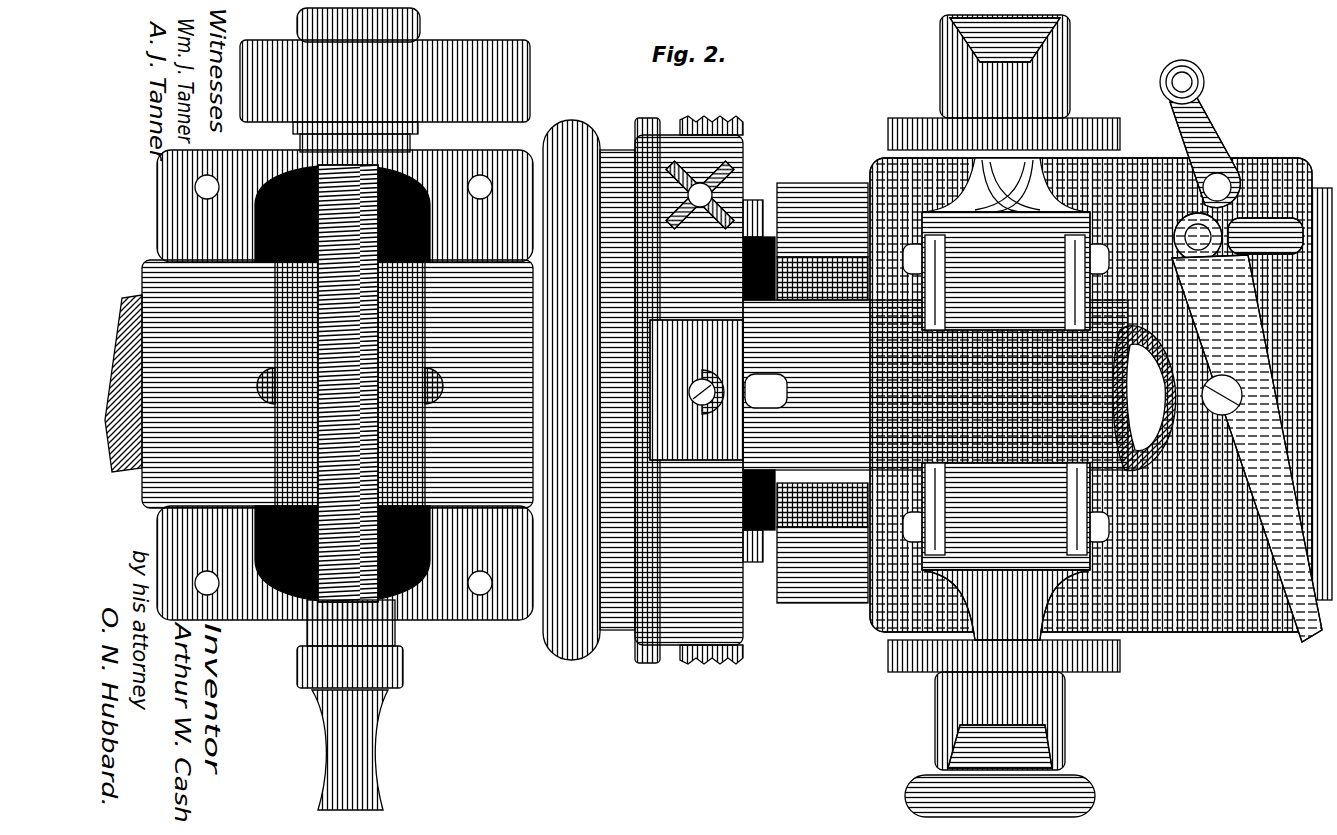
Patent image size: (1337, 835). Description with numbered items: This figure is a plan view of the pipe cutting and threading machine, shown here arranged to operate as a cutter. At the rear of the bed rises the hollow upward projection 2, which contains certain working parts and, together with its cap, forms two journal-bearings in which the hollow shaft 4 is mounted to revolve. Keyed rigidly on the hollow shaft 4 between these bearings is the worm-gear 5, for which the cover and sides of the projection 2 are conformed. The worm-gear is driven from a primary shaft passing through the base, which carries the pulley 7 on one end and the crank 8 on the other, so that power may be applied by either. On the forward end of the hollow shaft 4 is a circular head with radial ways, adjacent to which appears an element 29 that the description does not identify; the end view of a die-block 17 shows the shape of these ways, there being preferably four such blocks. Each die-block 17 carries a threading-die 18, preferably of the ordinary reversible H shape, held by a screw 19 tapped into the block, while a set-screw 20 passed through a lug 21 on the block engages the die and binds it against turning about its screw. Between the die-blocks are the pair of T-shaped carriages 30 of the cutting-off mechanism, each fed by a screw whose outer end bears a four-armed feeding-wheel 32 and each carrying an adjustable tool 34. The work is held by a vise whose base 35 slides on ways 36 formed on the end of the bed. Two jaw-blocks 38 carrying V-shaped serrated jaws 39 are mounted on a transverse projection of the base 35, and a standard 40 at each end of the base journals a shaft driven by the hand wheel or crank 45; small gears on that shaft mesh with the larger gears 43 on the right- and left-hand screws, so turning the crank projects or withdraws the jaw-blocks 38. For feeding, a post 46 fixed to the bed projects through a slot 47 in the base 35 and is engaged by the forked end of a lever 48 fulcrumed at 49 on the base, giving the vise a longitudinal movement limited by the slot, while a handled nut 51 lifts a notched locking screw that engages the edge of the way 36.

The hollow upward projection 2 is at (160, 222).
The hollow shaft 4 is at (319, 384).
The worm-gear 5 is at (340, 316).
The pulley 7 is at (525, 96).
The crank 8 is at (366, 748).
The die-block 17 is at (658, 132).
The threading-die 18 is at (736, 134).
The screw 19 is at (912, 250).
The set-screw 20 is at (700, 392).
The lug 21 is at (690, 400).
The ring flange 29 is at (590, 128).
The T-shaped carriage 30 is at (762, 210).
The four-armed feeding-wheel 32 is at (732, 198).
The adjustable tool 34 is at (788, 232).
The vise base 35 is at (892, 160).
The ways 36 is at (868, 255).
The jaw-block 38 is at (1088, 200).
The jaws 39 is at (937, 330).
The standard 40 is at (1070, 52).
The gears 43 is at (920, 104).
The hand wheel or crank 45 is at (1080, 786).
The post 46 is at (1192, 215).
The slot 47 is at (1268, 218).
The lever 48 is at (1247, 448).
The fulcrum 49 is at (1226, 415).
The handled nut 51 is at (1206, 120).